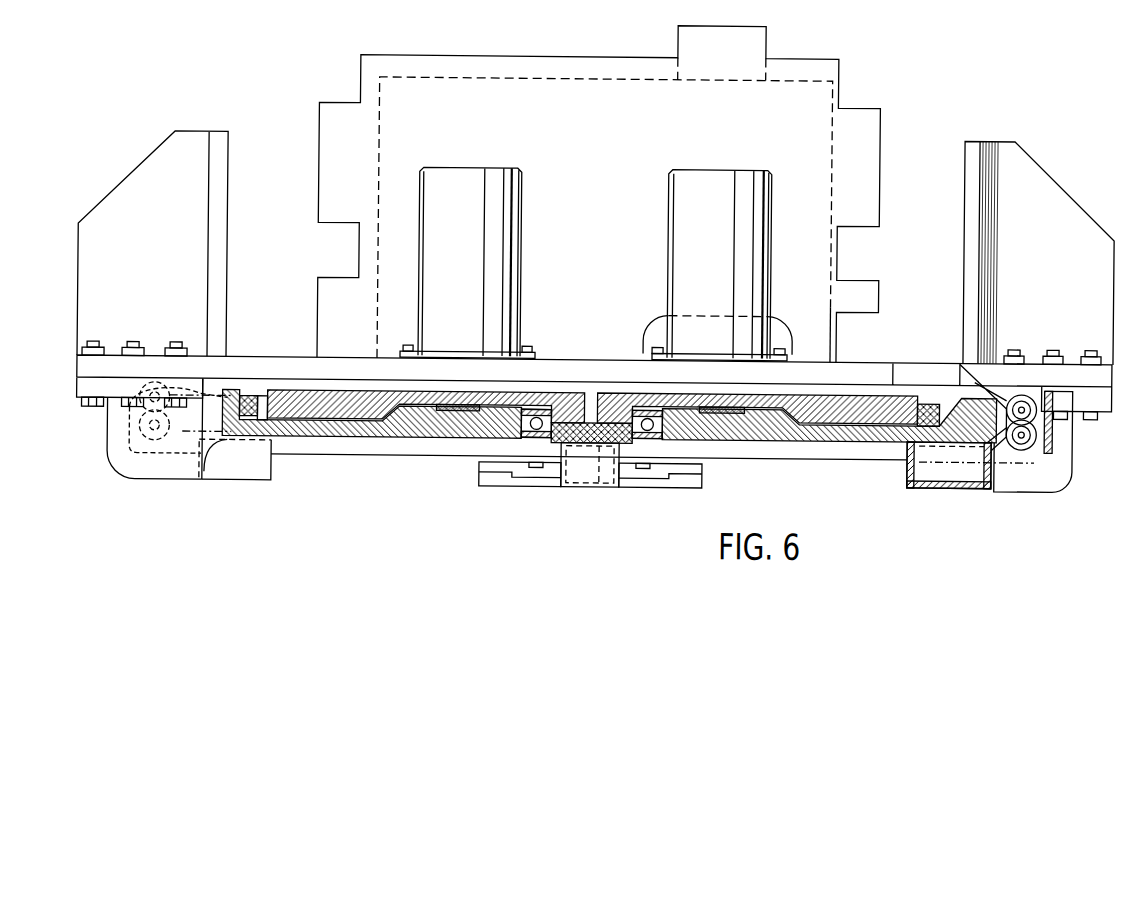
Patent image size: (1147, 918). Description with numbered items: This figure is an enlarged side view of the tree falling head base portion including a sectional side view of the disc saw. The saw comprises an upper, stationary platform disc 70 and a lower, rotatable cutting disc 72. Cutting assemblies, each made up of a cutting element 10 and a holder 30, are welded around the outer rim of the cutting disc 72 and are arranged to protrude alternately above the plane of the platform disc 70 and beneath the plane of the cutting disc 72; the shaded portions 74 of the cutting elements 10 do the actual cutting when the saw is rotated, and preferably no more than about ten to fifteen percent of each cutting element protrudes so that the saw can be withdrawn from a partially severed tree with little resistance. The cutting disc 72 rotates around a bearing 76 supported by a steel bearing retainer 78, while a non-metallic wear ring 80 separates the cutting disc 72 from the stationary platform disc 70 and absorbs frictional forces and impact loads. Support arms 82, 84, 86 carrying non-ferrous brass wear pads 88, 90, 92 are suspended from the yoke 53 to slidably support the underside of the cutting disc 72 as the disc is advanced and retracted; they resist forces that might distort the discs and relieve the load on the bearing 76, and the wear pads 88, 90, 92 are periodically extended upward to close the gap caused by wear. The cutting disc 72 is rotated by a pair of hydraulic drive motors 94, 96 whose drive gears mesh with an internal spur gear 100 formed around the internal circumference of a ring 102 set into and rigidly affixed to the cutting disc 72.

The cutting element 10 is at (988, 378).
The holder 30 is at (960, 356).
The yoke 53 is at (1020, 154).
The platform disc 70 is at (632, 396).
The cutting disc 72 is at (416, 430).
The shaded portions 74 is at (1028, 388).
The bearing 76 is at (546, 410).
The bearing retainer 78 is at (652, 440).
The wear ring 80 is at (472, 410).
The support arm 82 is at (256, 466).
The support arm 84 is at (1023, 470).
The support arm 86 is at (562, 488).
The wear pad 88 is at (262, 450).
The wear pad 90 is at (908, 459).
The wear pad 92 is at (600, 486).
The hydraulic drive motor 94 is at (715, 214).
The hydraulic drive motor 96 is at (463, 213).
The internal spur gear 100 is at (260, 398).
The ring 102 is at (240, 388).